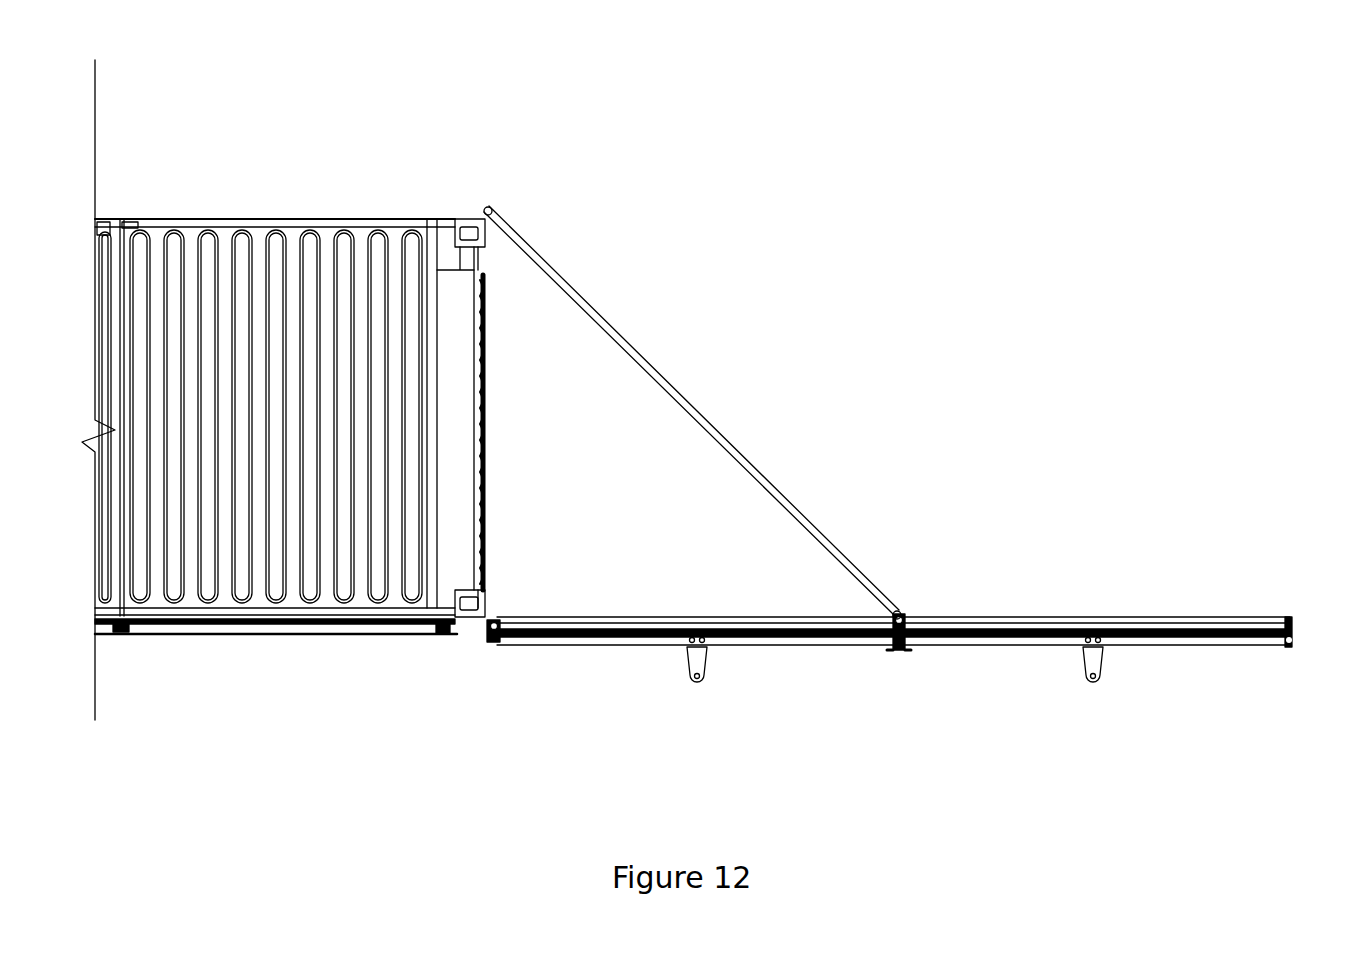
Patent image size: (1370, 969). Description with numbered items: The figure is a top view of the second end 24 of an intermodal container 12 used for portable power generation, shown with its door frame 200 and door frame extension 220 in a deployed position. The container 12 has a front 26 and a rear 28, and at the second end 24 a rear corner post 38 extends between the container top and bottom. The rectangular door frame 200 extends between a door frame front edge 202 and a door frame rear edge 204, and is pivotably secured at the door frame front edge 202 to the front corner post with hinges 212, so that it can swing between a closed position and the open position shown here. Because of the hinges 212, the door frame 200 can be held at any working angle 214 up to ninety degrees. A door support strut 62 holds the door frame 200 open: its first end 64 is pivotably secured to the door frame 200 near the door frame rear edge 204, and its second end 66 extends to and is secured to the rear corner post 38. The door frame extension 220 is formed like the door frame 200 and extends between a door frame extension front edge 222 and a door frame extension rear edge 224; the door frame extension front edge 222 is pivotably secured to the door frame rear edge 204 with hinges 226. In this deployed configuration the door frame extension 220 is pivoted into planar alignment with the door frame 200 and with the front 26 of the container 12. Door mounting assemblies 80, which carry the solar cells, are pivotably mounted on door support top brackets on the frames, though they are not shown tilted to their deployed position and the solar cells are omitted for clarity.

The rear 28 is at (270, 118).
The front 26 is at (283, 692).
The intermodal container 12 is at (343, 258).
The rear corner post 38 is at (470, 220).
The hinges 212 is at (482, 625).
The second end of door support strut 66 is at (496, 200).
The door support strut 62 is at (712, 426).
The second end 24 is at (780, 330).
The door frame 200 is at (757, 624).
The door frame extension 220 is at (1166, 622).
The door frame extension rear edge 224 is at (1302, 642).
The door frame front edge 202 is at (500, 663).
The hinges 226 is at (897, 612).
The first end of door support strut 64 is at (915, 603).
The door frame rear edge 204 is at (886, 664).
The door frame extension front edge 222 is at (903, 664).
The door mounting assembly 80 is at (733, 650).
The working angle 214 is at (500, 511).